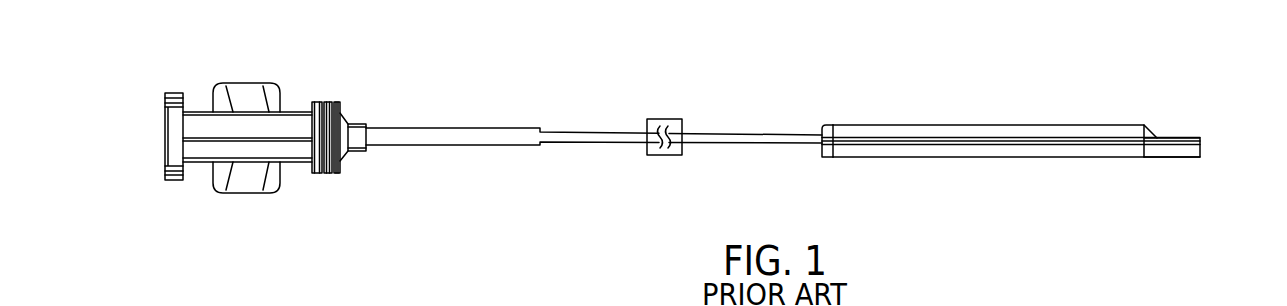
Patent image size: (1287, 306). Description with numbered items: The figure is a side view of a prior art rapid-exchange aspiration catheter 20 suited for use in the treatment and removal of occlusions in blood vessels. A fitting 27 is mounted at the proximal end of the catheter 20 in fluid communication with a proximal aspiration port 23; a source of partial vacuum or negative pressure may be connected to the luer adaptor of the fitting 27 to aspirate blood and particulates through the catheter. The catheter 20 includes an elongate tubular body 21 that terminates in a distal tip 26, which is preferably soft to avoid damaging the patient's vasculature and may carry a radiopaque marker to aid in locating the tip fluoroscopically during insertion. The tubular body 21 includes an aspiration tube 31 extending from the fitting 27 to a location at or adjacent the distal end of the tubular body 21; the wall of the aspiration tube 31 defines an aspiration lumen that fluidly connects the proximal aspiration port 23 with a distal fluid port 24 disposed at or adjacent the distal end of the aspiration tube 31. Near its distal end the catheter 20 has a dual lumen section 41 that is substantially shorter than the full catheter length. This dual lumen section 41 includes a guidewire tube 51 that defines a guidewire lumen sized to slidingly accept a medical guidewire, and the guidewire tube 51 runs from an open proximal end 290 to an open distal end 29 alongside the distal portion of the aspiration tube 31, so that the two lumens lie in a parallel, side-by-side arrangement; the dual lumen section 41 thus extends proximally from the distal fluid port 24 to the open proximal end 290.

The aspiration catheter 20 is at (711, 59).
The fitting 27 is at (253, 71).
The proximal aspiration port 23 is at (360, 127).
The elongate tubular body 21 is at (747, 150).
The aspiration tube 31 is at (633, 144).
The dual lumen section 41 is at (1163, 103).
The open proximal end 290 is at (822, 150).
The guidewire tube 51 is at (1046, 150).
The distal fluid port 24 is at (1151, 136).
The open distal end 29 is at (1202, 148).
The distal tip 26 is at (1179, 167).